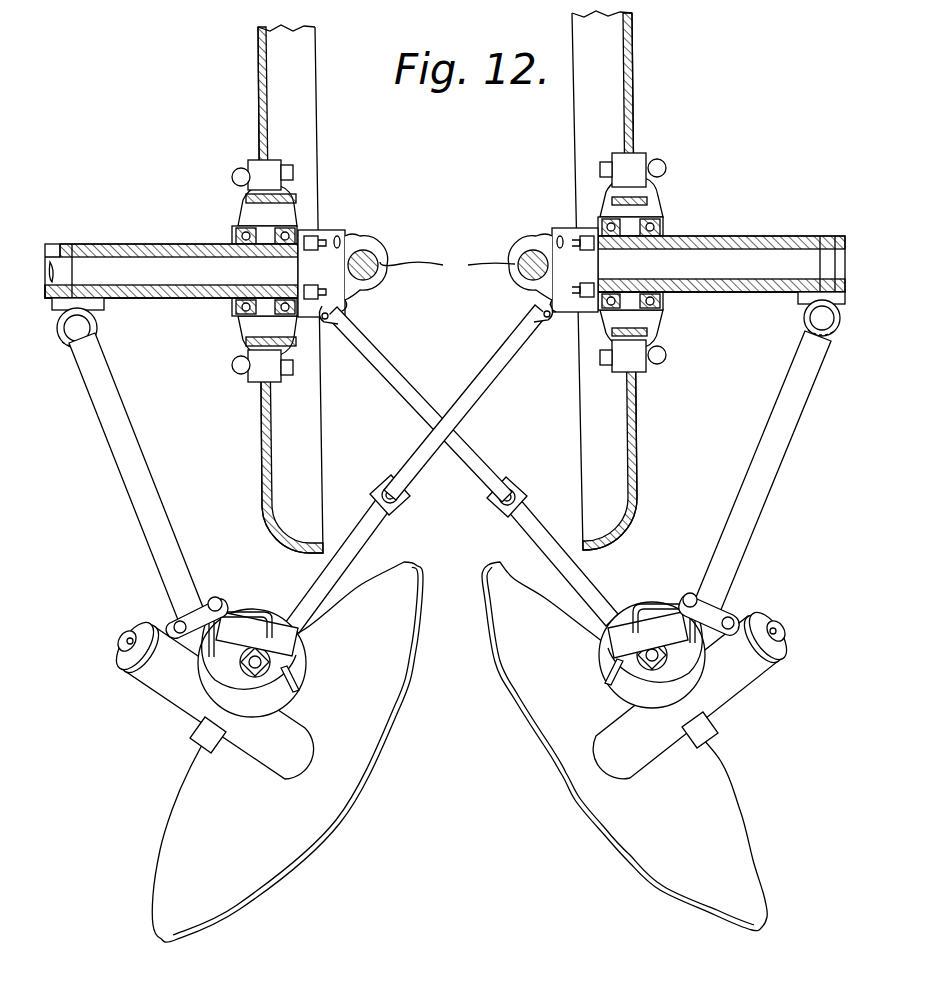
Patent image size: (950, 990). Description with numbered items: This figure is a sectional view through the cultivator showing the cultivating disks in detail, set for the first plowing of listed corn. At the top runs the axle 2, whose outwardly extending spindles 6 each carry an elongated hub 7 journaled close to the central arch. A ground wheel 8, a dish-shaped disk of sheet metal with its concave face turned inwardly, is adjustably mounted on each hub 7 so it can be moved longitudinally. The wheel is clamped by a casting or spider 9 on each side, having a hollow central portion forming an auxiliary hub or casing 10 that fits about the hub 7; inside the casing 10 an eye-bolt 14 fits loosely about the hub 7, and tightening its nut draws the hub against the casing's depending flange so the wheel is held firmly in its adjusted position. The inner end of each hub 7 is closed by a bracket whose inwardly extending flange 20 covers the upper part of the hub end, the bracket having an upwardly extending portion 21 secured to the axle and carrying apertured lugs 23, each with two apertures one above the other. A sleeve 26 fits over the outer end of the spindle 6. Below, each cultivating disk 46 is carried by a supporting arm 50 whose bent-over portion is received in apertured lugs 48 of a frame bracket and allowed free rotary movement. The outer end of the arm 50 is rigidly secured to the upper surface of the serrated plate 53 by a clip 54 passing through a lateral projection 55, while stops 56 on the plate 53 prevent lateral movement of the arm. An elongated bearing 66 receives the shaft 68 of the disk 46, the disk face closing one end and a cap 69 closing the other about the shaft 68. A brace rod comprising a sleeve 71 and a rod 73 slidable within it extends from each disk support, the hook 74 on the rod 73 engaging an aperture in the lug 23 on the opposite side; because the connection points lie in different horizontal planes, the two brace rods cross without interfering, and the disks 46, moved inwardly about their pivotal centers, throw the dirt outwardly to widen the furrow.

The axle 2 is at (447, 265).
The spindle 6 is at (150, 270).
The elongated hub 7 is at (110, 243).
The ground wheel 8 is at (300, 113).
The casting or spider 9 is at (268, 160).
The auxiliary hub or casing 10 is at (250, 192).
The eye-bolt 14 is at (236, 231).
The inwardly extending flange 20 is at (305, 268).
The upwardly extending portion of bracket 21 is at (372, 252).
The apertured lug 23 is at (343, 233).
The sleeve 26 is at (196, 298).
The cultivating disk 46 is at (513, 642).
The apertured lugs 48 is at (100, 326).
The supporting arm 50 is at (118, 405).
The plate 53 is at (280, 692).
The clip 54 is at (176, 613).
The projection 55 is at (218, 598).
The stops 56 is at (248, 608).
The elongated bearing 66 is at (178, 692).
The shaft 68 is at (124, 633).
The cap 69 is at (130, 664).
The sleeve 71 is at (517, 523).
The rod 73 is at (487, 373).
The hook 74 is at (328, 326).